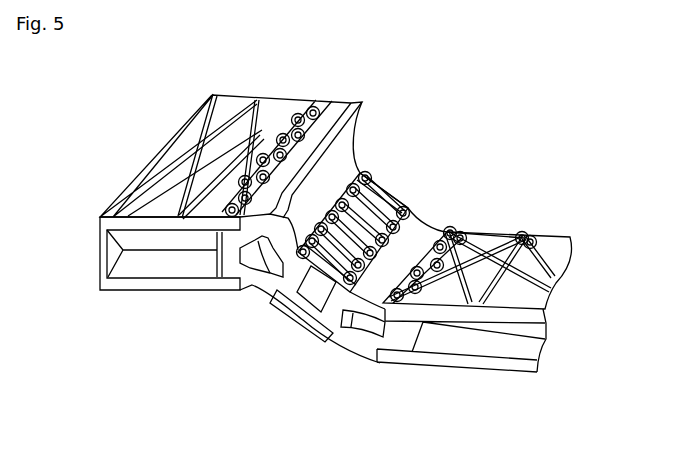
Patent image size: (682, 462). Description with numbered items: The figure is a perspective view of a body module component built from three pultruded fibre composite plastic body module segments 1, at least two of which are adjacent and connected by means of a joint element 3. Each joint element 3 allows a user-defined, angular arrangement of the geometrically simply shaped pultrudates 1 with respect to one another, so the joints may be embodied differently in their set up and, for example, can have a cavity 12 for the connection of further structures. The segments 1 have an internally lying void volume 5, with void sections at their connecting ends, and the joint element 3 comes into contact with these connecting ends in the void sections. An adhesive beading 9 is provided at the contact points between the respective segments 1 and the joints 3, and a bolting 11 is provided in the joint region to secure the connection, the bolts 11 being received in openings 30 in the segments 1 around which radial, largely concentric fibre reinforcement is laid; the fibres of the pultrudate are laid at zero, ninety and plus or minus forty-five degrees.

The body module segment 1 is at (240, 97).
The joint element 3 is at (257, 280).
The void volume 5 is at (132, 262).
The adhesive beading 9 is at (215, 238).
The bolting 11 is at (412, 209).
The cavity 12 is at (348, 327).
The opening 30 is at (471, 230).